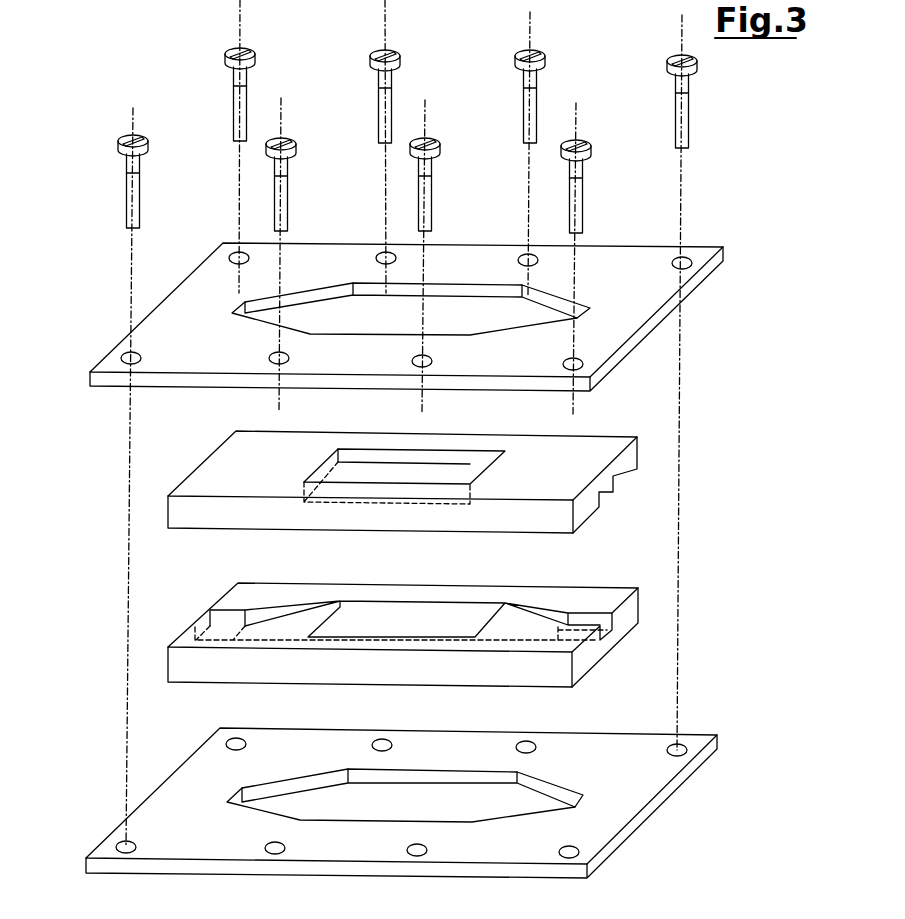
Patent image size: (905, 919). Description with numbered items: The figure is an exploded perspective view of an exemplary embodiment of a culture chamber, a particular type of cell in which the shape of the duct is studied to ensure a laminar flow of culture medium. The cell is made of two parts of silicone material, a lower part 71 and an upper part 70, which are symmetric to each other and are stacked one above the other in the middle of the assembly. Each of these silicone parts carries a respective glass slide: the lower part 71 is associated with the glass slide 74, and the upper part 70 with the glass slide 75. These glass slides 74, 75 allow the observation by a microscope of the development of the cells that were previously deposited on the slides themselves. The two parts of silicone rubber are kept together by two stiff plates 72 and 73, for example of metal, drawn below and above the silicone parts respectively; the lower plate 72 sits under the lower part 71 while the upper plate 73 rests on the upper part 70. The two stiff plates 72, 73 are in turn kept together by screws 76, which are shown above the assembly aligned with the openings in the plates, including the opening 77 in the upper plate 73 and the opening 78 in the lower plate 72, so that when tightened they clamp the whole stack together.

The upper part 70 is at (420, 463).
The lower part 71 is at (420, 606).
The stiff plate 72 is at (422, 777).
The stiff plate 73 is at (437, 295).
The glass slide 74 is at (395, 623).
The glass slide 75 is at (377, 477).
The screws 76 is at (584, 198).
The bore in upper plate 77 is at (690, 262).
The bore in lower plate 78 is at (682, 742).